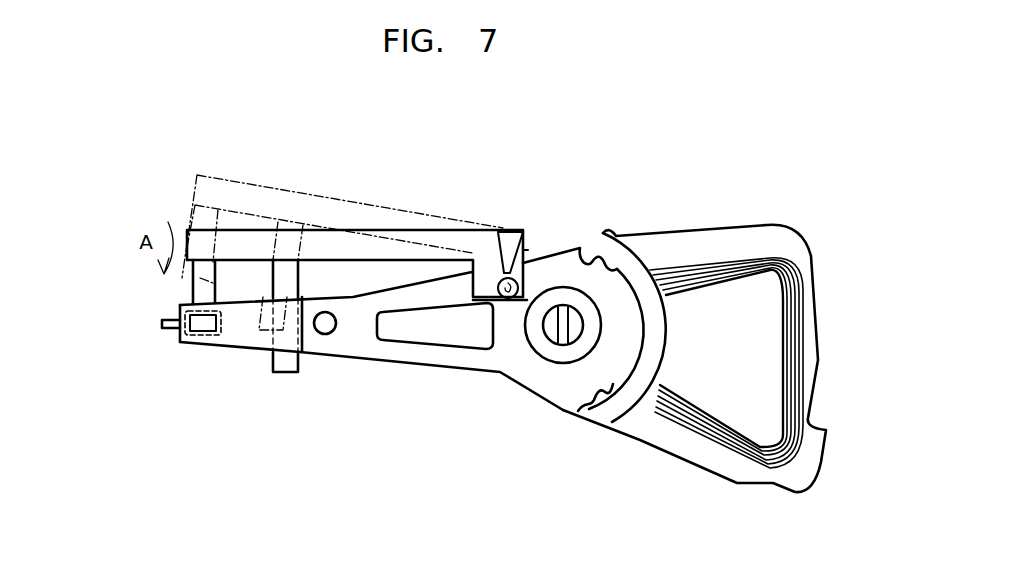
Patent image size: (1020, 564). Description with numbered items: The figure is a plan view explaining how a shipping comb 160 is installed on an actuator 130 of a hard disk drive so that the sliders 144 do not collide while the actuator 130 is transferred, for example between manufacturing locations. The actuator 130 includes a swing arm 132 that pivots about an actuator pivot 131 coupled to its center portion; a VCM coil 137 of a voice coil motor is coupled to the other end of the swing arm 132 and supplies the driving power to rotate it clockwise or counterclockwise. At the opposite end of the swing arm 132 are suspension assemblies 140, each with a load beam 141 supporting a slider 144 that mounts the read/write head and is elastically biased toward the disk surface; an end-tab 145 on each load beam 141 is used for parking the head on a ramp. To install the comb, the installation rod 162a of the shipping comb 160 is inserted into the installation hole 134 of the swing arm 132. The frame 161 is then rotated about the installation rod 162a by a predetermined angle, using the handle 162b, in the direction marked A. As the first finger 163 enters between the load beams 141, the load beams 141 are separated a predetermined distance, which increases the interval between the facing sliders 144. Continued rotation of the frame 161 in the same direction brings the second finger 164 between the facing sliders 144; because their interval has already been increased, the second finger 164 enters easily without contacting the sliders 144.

The actuator 130 is at (620, 180).
The actuator pivot 131 is at (587, 410).
The swing arm 132 is at (500, 372).
The installation hole 134 is at (526, 248).
The VCM coil 137 is at (737, 448).
The suspension assembly 140 is at (177, 372).
The load beam 141 is at (246, 335).
The slider 144 is at (207, 333).
The end-tab 145 is at (162, 325).
The shipping comb 160 is at (424, 230).
The frame 161 is at (353, 245).
The installation rod 162a is at (499, 230).
The handle 162b is at (487, 302).
The first finger 163 is at (287, 372).
The second finger 164 is at (192, 291).